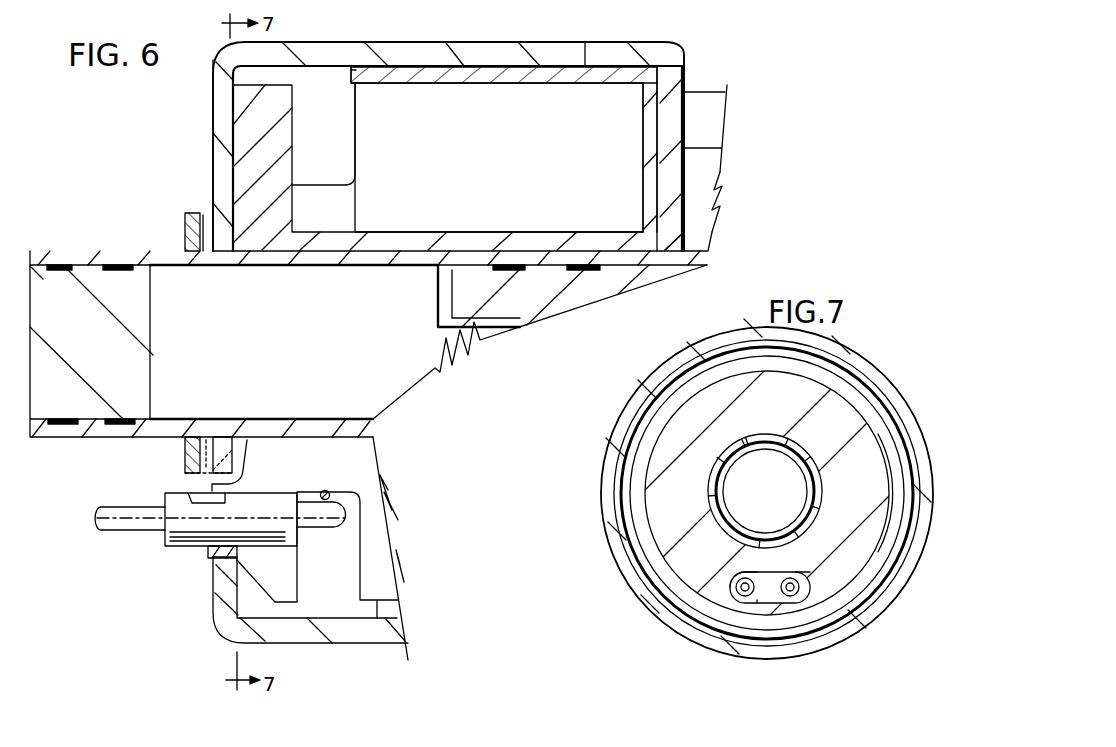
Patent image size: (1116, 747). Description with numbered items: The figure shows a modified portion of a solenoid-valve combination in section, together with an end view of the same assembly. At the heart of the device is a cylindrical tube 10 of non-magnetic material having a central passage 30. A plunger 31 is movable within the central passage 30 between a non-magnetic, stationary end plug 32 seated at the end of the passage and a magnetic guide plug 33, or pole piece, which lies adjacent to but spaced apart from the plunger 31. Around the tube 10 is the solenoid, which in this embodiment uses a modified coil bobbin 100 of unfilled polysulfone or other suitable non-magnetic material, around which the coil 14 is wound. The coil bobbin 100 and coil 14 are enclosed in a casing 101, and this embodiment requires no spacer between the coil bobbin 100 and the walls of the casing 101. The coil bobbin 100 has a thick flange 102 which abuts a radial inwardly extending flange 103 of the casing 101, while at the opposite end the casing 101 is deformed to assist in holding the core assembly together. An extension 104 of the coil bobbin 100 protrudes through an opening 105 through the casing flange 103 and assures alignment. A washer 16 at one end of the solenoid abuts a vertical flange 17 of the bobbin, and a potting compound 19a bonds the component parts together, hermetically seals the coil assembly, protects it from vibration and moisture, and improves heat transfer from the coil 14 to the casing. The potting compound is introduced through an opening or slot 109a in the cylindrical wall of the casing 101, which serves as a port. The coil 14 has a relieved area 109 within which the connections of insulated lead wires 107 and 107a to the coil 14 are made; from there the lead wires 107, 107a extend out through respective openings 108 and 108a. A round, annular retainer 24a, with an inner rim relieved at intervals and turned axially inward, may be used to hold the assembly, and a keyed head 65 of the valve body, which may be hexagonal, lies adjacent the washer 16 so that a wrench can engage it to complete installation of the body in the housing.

In FIG. 6, the cylindrical tube 10 is at (97, 254).
In FIG. 7, the cylindrical tube 10 is at (712, 483).
In FIG. 6, the coil 14 is at (545, 178).
In FIG. 6, the washer 16 is at (673, 96).
In FIG. 6, the vertical flange 17 is at (645, 122).
In FIG. 6, the potting compound 19a is at (546, 60).
In FIG. 6, the retainer 24a is at (186, 237).
In FIG. 6, the central passage 30 is at (143, 268).
In FIG. 7, the central passage 30 is at (786, 446).
In FIG. 6, the plunger 31 is at (297, 354).
In FIG. 7, the plunger 31 is at (773, 498).
In FIG. 6, the stationary end plug 32 is at (97, 356).
In FIG. 6, the guide plug 33 is at (503, 305).
In FIG. 6, the keyed head 65 is at (705, 121).
In FIG. 6, the coil bobbin 100 is at (283, 222).
In FIG. 7, the coil bobbin 100 is at (778, 417).
In FIG. 6, the casing 101 is at (360, 58).
In FIG. 7, the casing 101 is at (613, 510).
In FIG. 6, the thick flange 102 is at (280, 134).
In FIG. 7, the thick flange 102 is at (642, 410).
In FIG. 6, the casing flange 103 is at (220, 123).
In FIG. 6, the extension 104 is at (213, 558).
In FIG. 7, the extension 104 is at (778, 560).
In FIG. 6, the opening 105 is at (248, 465).
In FIG. 7, the opening 105 is at (757, 603).
In FIG. 6, the insulated lead wire 107 is at (133, 522).
In FIG. 7, the insulated lead wire 107 is at (742, 582).
In FIG. 7, the insulated lead wire 107a is at (784, 603).
In FIG. 6, the opening 108 is at (222, 500).
In FIG. 7, the opening 108 is at (740, 593).
In FIG. 7, the opening 108a is at (797, 601).
In FIG. 6, the relieved area 109 is at (350, 571).
In FIG. 6, the slot 109a is at (587, 48).